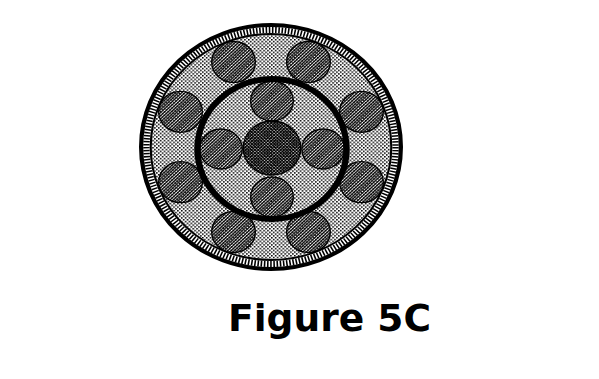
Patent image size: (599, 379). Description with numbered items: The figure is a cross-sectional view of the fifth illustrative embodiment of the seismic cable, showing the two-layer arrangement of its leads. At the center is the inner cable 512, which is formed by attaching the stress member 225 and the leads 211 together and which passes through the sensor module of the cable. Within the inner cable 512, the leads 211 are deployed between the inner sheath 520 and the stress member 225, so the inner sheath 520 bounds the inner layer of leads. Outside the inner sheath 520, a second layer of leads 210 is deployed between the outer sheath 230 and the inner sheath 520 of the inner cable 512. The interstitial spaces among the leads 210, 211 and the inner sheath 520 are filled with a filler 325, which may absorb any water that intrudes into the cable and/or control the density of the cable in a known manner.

The sheath 230 is at (345, 45).
The stress member 225 is at (374, 72).
The inner sheath 520 is at (174, 62).
The filler 325 is at (147, 141).
The inner cable 512 is at (362, 139).
The leads 211 is at (160, 217).
The leads 210 is at (369, 212).